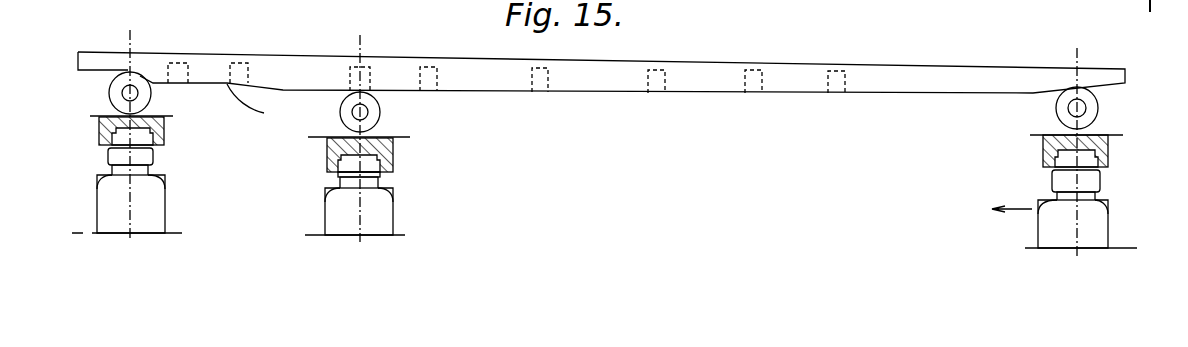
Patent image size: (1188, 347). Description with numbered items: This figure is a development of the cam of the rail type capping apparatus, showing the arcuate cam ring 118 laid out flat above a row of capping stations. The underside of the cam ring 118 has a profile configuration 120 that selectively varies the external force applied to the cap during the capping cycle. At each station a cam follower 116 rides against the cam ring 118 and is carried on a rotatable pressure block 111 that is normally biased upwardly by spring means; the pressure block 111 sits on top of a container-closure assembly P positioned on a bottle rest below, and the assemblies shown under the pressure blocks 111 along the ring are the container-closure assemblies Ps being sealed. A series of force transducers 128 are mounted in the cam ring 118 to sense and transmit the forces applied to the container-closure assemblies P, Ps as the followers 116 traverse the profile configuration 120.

The rotatable pressure block 111 is at (99, 125).
The cam follower 116 is at (152, 97).
The arcuate cam ring 118 is at (758, 44).
The profile configuration 120 is at (302, 92).
The force transducers 128 is at (418, 77).
The container-closure assembly Ps is at (150, 205).
The container-closure assembly P is at (1150, 229).